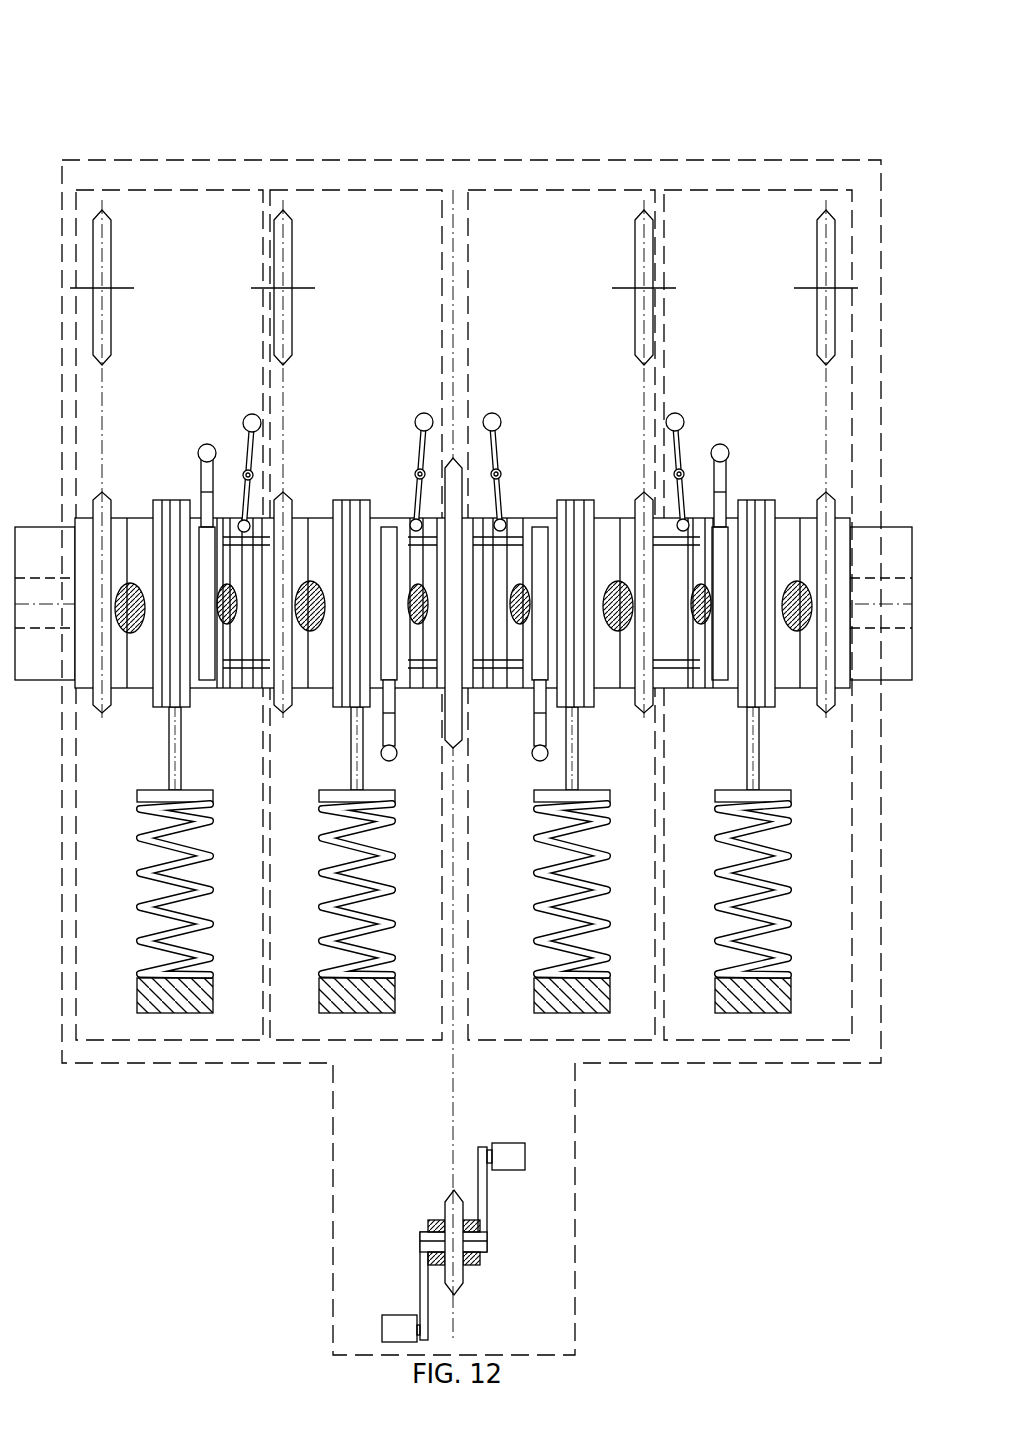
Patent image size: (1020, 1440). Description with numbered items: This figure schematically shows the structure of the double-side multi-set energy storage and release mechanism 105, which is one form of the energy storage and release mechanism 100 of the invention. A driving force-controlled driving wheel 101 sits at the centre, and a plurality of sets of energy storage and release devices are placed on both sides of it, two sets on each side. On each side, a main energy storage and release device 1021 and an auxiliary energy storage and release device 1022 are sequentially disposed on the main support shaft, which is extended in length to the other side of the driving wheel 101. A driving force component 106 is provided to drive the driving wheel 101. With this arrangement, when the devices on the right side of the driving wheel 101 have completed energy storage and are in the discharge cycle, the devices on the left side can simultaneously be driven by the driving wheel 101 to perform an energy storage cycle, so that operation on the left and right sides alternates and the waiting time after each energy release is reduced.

The energy storage and release mechanism 100 is at (456, 75).
The double-side multi-set energy storage and release mechanism 105 is at (125, 158).
The auxiliary energy storage and release device 1022 is at (182, 188).
The main energy storage and release device 1021 is at (342, 188).
The driving wheel 101 is at (453, 466).
The driving force component 106 is at (522, 1250).